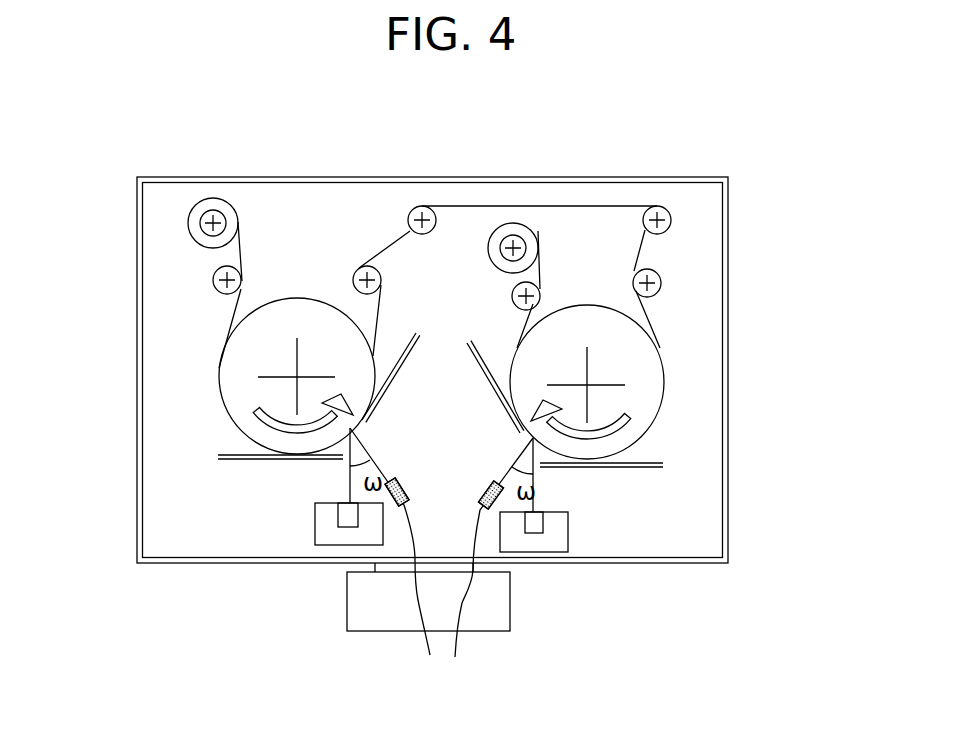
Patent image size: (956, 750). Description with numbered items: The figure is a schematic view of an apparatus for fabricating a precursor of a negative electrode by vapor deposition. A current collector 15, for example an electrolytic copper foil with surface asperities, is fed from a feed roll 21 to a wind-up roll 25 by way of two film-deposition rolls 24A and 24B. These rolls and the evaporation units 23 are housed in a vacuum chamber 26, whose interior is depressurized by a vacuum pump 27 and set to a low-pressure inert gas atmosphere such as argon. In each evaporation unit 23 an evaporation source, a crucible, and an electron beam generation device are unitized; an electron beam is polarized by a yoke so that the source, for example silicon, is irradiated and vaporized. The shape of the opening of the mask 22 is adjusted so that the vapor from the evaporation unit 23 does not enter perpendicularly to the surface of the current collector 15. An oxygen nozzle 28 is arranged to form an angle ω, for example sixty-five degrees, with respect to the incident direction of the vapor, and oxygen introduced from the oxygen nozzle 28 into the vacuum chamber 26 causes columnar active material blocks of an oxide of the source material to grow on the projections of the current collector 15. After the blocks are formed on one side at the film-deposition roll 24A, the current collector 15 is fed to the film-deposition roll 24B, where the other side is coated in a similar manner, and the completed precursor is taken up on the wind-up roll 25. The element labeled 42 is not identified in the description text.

The current collector 15 is at (233, 322).
The feed roll 21 is at (213, 198).
The mask 22 is at (233, 460).
The evaporation unit 23 is at (315, 525).
The film-deposition roll 24A is at (248, 383).
The film-deposition roll 24B is at (650, 382).
The wind-up roll 25 is at (516, 223).
The vacuum chamber 26 is at (442, 177).
The vacuum pump 27 is at (347, 597).
The oxygen nozzle 28 is at (441, 560).
The blade 42 is at (490, 392).